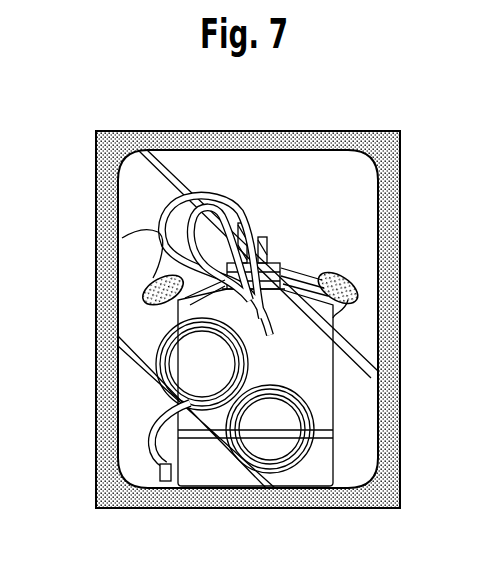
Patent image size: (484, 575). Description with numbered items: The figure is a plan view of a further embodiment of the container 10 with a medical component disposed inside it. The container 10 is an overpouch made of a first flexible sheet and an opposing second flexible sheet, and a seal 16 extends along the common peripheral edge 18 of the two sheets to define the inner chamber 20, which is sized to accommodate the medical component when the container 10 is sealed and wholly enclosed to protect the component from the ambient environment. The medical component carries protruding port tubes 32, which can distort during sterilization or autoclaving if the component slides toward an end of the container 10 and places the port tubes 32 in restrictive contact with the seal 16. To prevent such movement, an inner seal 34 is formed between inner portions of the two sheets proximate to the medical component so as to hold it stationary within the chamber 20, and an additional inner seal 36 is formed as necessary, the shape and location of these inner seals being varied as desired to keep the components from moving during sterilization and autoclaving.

The container 10 is at (131, 93).
The seal 16 is at (400, 469).
The common peripheral edge 18 is at (312, 131).
The chamber 20 is at (128, 258).
The port tubes 32 is at (250, 183).
The inner seal 34 is at (113, 236).
The inner seal 36 is at (344, 272).